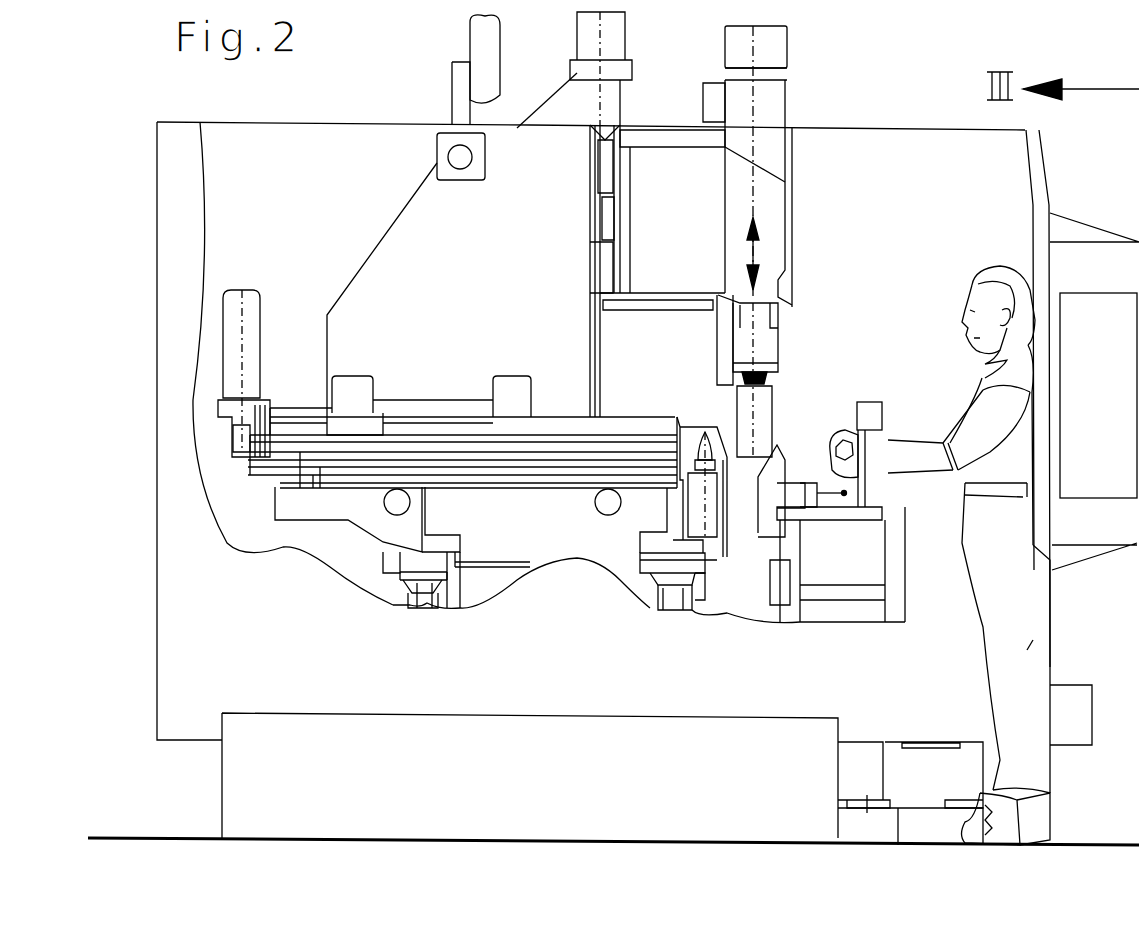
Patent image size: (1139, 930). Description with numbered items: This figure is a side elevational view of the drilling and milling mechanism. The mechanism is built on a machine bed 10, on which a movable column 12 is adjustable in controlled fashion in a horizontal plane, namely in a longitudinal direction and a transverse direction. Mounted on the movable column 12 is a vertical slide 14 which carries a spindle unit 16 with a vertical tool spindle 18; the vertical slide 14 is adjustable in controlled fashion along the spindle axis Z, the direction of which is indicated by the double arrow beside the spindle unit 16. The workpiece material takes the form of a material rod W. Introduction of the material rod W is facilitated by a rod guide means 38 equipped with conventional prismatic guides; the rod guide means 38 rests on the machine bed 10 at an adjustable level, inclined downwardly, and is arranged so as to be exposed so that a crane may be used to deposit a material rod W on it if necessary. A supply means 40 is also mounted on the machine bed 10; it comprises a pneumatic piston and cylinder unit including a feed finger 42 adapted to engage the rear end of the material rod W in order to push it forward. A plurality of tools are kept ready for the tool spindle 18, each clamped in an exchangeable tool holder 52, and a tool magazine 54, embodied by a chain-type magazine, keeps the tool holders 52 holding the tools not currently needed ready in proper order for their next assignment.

The machine bed 10 is at (427, 603).
The movable column 12 is at (415, 230).
The vertical slide 14 is at (727, 213).
The spindle unit 16 is at (770, 147).
The tool spindle 18 is at (765, 382).
The rod guide means 38 is at (870, 473).
The supply means 40 is at (785, 455).
The feed finger 42 is at (830, 490).
The tool holder 52 is at (700, 432).
The tool magazine 54 is at (286, 315).
The spindle axis Z is at (757, 252).
The material rod W is at (862, 440).